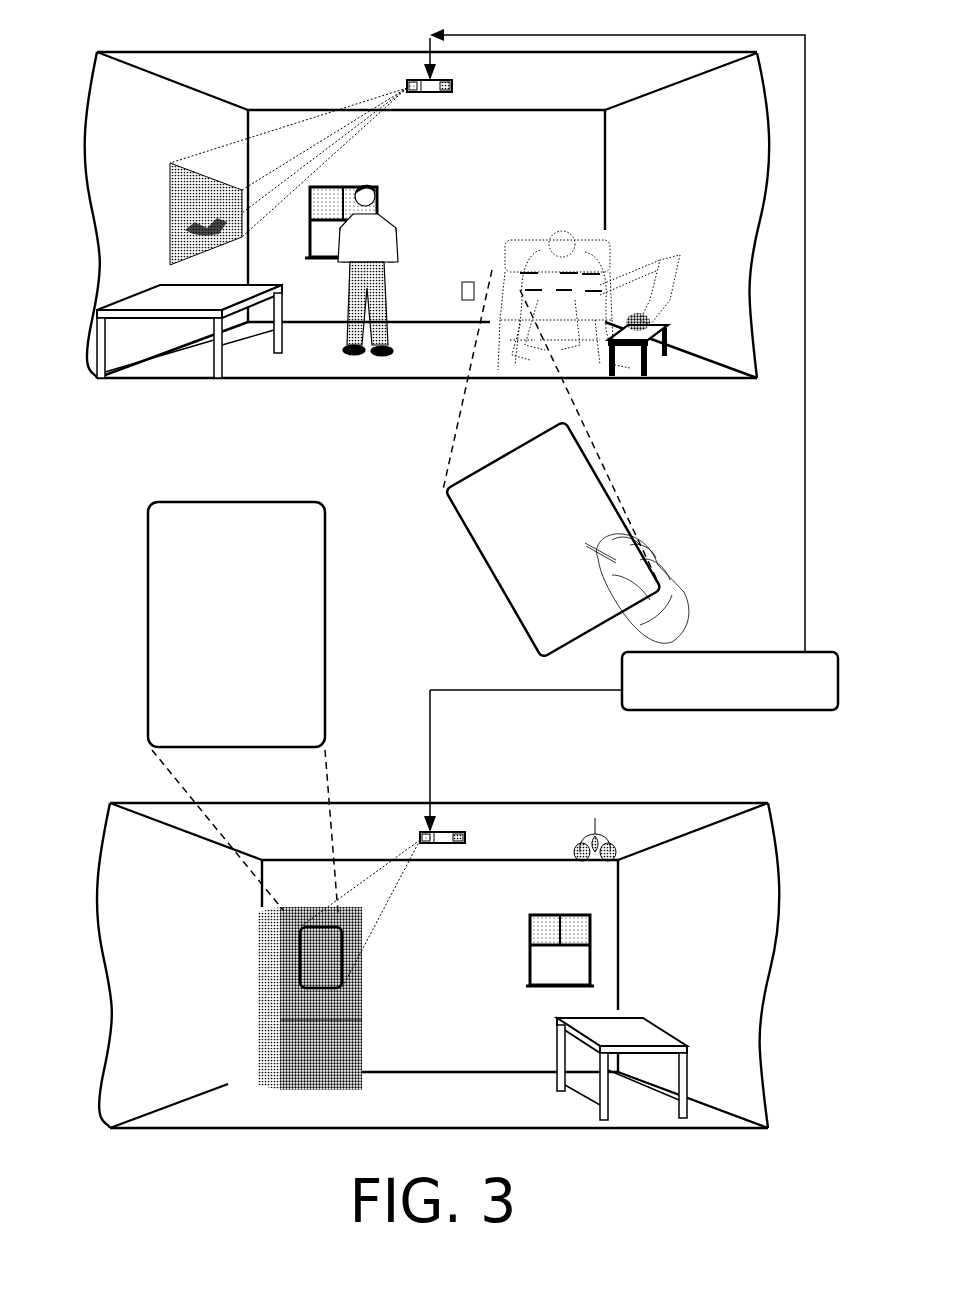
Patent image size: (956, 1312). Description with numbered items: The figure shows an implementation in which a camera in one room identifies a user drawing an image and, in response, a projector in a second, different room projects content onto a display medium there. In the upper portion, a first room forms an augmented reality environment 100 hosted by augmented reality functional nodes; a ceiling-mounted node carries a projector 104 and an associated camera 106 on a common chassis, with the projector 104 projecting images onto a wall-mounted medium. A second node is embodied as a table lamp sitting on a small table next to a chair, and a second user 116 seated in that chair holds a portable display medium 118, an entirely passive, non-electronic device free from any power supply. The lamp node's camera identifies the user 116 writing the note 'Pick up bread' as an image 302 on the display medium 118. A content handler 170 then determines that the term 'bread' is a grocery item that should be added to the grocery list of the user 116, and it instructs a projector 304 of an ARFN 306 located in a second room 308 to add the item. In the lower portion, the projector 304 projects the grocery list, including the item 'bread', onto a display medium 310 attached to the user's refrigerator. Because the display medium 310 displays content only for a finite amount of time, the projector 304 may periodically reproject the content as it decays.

The environment 100 is at (110, 28).
The projector 104 is at (407, 84).
The camera 106 is at (454, 84).
The second user 116 is at (548, 226).
The portable display medium 118 is at (520, 300).
The content handler 170 is at (631, 430).
The image 302 is at (518, 580).
The projector 304 is at (420, 832).
The ARFN 306 is at (445, 843).
The second room 308 is at (110, 770).
The display medium 310 is at (237, 502).